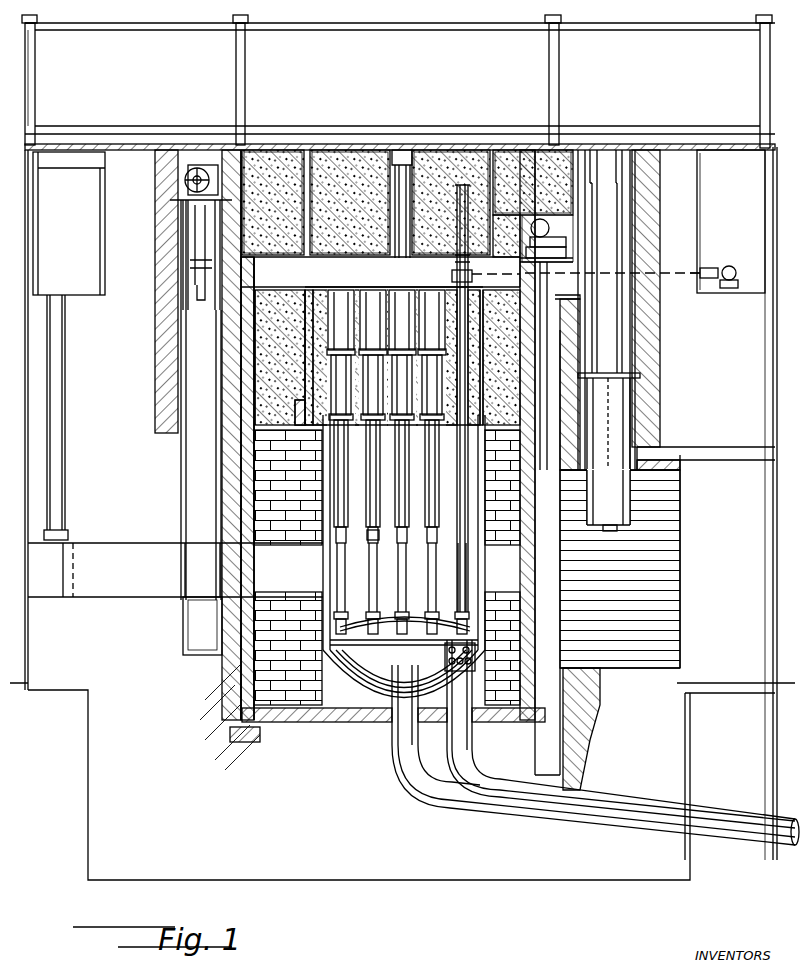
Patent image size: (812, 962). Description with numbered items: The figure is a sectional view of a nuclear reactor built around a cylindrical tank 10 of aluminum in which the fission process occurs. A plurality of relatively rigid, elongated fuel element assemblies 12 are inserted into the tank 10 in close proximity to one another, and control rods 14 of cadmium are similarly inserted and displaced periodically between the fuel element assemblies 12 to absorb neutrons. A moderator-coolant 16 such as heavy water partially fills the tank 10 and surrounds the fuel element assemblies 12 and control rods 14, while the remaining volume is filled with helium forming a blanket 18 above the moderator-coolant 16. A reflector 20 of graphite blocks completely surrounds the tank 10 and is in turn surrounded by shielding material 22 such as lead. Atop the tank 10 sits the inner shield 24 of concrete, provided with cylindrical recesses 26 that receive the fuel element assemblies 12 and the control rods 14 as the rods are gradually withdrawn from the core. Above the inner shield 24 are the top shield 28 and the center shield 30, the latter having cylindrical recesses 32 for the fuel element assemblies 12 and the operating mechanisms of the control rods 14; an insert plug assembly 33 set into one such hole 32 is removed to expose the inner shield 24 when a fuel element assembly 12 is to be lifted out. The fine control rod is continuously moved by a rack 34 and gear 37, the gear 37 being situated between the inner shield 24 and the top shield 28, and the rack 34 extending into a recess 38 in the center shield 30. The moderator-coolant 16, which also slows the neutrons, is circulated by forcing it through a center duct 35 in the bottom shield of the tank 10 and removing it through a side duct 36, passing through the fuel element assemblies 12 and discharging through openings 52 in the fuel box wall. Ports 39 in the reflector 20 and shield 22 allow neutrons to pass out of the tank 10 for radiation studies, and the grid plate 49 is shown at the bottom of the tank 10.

The cylindrical tank 10 is at (322, 565).
The fuel element assemblies 12 is at (405, 575).
The control rods 14 is at (463, 577).
The moderator-coolant 16 is at (367, 420).
The blanket 18 is at (352, 433).
The reflector 20 is at (258, 452).
The shielding material 22 is at (232, 482).
The inner shield 24 is at (357, 289).
The cylindrical recesses 26 is at (322, 374).
The top shield 28 is at (268, 148).
The center shield 30 is at (342, 148).
The cylindrical recesses 32 is at (448, 148).
The insert plug assembly 33 is at (405, 148).
The rack 34 is at (457, 265).
The center duct 35 is at (402, 737).
The side duct 36 is at (473, 756).
The gear 37 is at (473, 277).
The recess 38 is at (493, 198).
The ports 39 is at (248, 567).
The grid plate 49 is at (363, 625).
The openings 52 is at (383, 538).